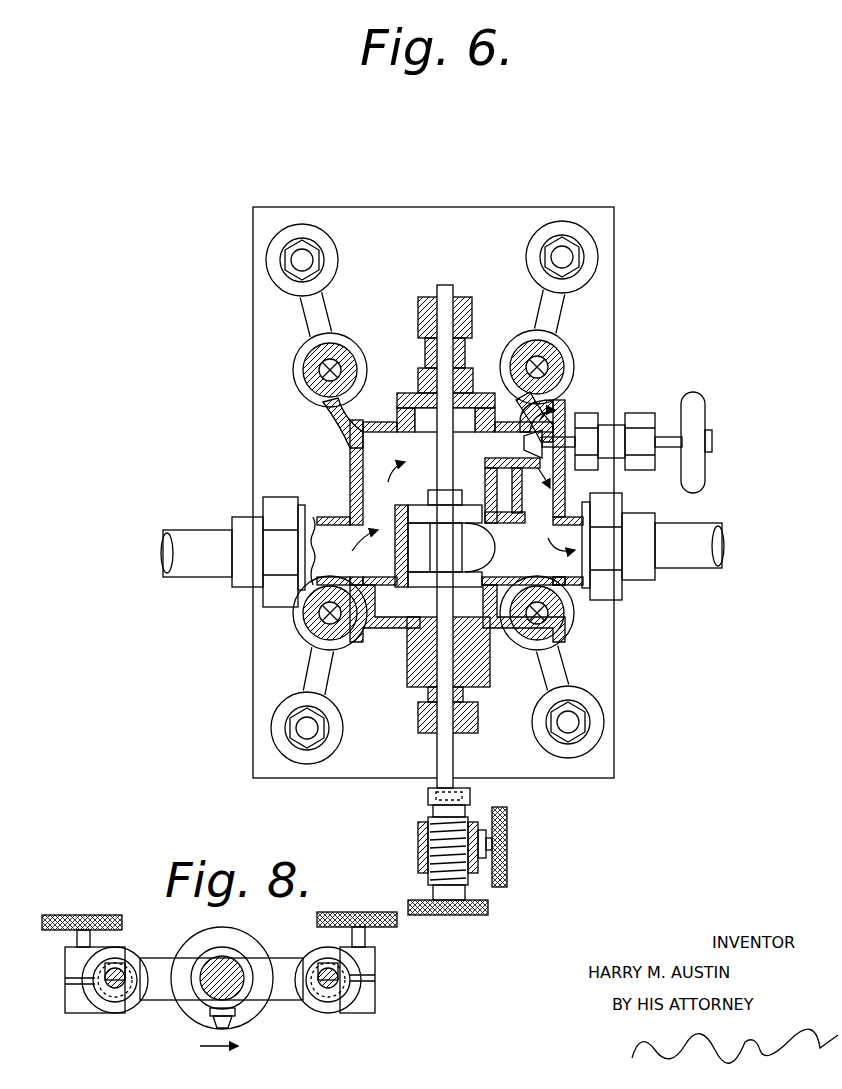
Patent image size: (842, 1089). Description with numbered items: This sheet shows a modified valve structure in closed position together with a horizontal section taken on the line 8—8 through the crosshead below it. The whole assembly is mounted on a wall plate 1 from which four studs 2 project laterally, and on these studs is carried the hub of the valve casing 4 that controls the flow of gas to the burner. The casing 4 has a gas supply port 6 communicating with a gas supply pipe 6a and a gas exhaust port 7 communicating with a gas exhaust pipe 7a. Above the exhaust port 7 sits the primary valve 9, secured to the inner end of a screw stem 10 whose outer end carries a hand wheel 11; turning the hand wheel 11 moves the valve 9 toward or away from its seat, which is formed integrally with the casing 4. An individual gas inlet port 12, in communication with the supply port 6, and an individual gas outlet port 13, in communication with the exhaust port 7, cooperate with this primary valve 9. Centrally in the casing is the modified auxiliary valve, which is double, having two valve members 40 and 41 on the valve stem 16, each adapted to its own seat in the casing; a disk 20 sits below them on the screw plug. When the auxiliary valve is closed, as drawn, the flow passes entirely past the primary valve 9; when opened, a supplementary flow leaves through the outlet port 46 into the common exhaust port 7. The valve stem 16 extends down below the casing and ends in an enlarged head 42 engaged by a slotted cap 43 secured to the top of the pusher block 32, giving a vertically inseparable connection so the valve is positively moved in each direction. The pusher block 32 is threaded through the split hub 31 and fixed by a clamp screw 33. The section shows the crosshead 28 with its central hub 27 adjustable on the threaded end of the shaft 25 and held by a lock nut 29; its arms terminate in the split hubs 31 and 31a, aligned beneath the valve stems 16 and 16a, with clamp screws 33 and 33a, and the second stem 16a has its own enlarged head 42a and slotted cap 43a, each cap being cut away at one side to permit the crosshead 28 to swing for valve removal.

In FIG. 6, the wall plate 1 is at (627, 683).
In FIG. 6, the studs 2 is at (322, 372).
In FIG. 6, the valve casing 4 is at (348, 478).
In FIG. 6, the gas supply port 6 is at (358, 502).
In FIG. 6, the gas supply pipe 6a is at (233, 552).
In FIG. 6, the gas exhaust port 7 is at (532, 492).
In FIG. 6, the gas exhaust pipe 7a is at (653, 546).
In FIG. 6, the section line 8 is at (352, 797).
In FIG. 6, the primary valve 9 is at (549, 444).
In FIG. 6, the screw stem 10 is at (662, 438).
In FIG. 6, the hand wheel 11 is at (702, 466).
In FIG. 6, the individual gas inlet port 12 is at (520, 448).
In FIG. 6, the individual gas outlet port 13 is at (542, 456).
In FIG. 6, the valve stem 16 is at (437, 440).
In FIG. 8, the valve stem 16 is at (122, 978).
In FIG. 8, the valve stem 16a is at (328, 970).
In FIG. 6, the disk 20 is at (418, 642).
In FIG. 8, the shaft 25 is at (234, 968).
In FIG. 8, the central hub 27 is at (232, 1002).
In FIG. 8, the crosshead 28 is at (221, 979).
In FIG. 8, the lock nut 29 is at (190, 1018).
In FIG. 6, the split hub 31 is at (418, 850).
In FIG. 8, the split hub 31 is at (122, 1008).
In FIG. 8, the split hub 31a is at (330, 1006).
In FIG. 6, the pusher block 32 is at (458, 892).
In FIG. 6, the clamp screw 33 is at (507, 848).
In FIG. 8, the clamp screw 33 is at (78, 938).
In FIG. 8, the clamp screw 33a is at (366, 933).
In FIG. 6, the valve member 40 is at (420, 516).
In FIG. 6, the valve member 41 is at (428, 587).
In FIG. 6, the enlarged head 42 is at (430, 798).
In FIG. 8, the enlarged head 42 is at (118, 966).
In FIG. 8, the enlarged head 42a is at (322, 1000).
In FIG. 6, the slotted cap 43 is at (472, 795).
In FIG. 8, the slotted cap 43 is at (108, 1002).
In FIG. 8, the slotted cap 43a is at (362, 965).
In FIG. 6, the outlet port 46 is at (490, 547).